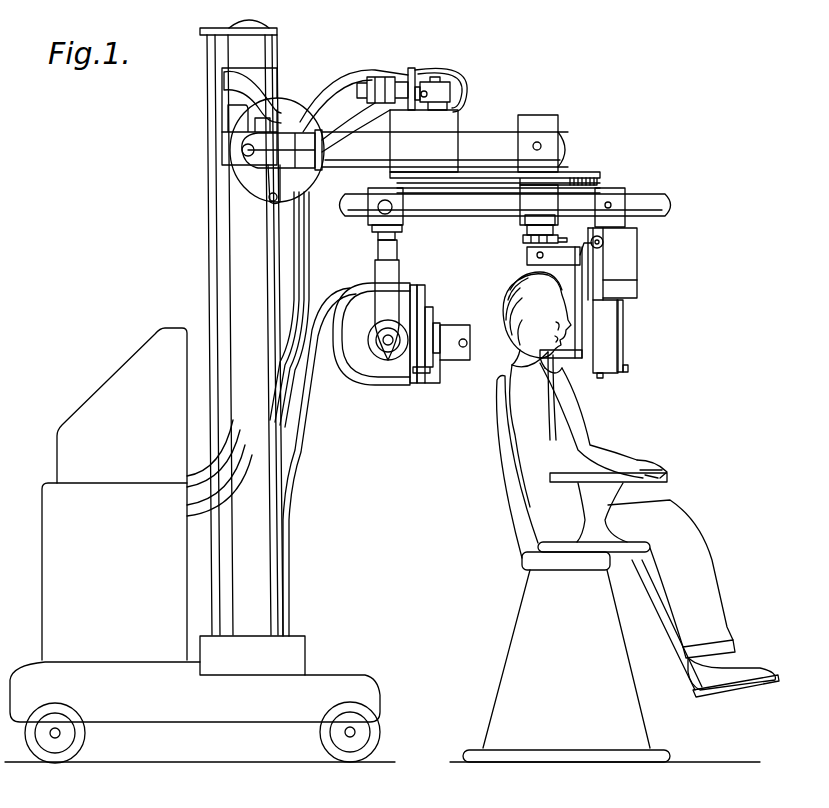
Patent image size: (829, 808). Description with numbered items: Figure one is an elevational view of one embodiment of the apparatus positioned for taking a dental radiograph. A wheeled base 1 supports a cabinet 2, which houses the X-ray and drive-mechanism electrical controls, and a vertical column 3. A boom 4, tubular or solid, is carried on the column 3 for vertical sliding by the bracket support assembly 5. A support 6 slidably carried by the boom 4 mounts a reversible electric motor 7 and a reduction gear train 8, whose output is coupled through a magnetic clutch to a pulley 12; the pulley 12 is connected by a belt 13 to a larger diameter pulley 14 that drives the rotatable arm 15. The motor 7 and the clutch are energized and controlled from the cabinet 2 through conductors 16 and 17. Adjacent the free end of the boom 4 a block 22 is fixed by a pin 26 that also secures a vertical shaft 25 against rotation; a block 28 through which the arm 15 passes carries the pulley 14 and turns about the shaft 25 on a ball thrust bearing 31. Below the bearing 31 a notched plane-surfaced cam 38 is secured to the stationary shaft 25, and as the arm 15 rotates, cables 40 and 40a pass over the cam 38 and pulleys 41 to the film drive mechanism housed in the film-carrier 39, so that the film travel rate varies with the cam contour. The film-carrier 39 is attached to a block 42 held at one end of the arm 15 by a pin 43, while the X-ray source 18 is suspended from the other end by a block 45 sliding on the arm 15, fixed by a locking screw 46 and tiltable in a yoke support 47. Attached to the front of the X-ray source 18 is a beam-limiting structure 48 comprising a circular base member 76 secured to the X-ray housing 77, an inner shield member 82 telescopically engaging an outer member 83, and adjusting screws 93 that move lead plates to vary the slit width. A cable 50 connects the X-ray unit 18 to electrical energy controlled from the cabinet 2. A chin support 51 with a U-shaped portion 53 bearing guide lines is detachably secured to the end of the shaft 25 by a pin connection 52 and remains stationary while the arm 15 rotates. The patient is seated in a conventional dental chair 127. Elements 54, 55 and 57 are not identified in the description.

The wheeled base 1 is at (195, 699).
The cabinet 2 is at (114, 494).
The vertical column 3 is at (241, 327).
The boom 4 is at (480, 140).
The bracket support assembly 5 is at (293, 89).
The support 6 is at (455, 125).
The reversible electric motor 7 is at (390, 78).
The reduction gear train 8 is at (455, 75).
The pulley 12 is at (430, 186).
The belt 13 is at (462, 186).
The larger diameter pulley 14 is at (489, 186).
The arm 15 is at (650, 200).
The conductor 16 is at (298, 282).
The conductor 17 is at (302, 305).
The X-ray source 18 is at (347, 370).
The block 22 is at (540, 120).
The vertical shaft 25 is at (535, 266).
The pin 26 is at (540, 146).
The block 28 is at (547, 195).
The ball thrust bearing 31 is at (519, 238).
The cam 38 is at (528, 244).
The film-carrier 39 is at (640, 342).
The cable 40 is at (623, 278).
The cable 40a is at (572, 240).
The pulleys 41 is at (606, 243).
The block 42 is at (620, 195).
The pin 43 is at (610, 203).
The block 45 is at (375, 190).
The locking screw 46 is at (380, 210).
The yoke support 47 is at (378, 272).
The beam-limiting structure 48 is at (458, 372).
The cable 50 is at (338, 432).
The chin support 51 is at (587, 370).
The pin connection 52 is at (605, 243).
The U-shaped portion 53 is at (574, 382).
The hanger bar 54 is at (625, 285).
The cassette latch 55 is at (618, 364).
The cassette side plate 57 is at (625, 322).
The circular base member 76 is at (422, 384).
The X-ray source housing 77 is at (412, 386).
The inner member 82 is at (437, 323).
The outer member 83 is at (457, 330).
The adjusting screw 93 is at (464, 350).
The dental chair 127 is at (505, 533).